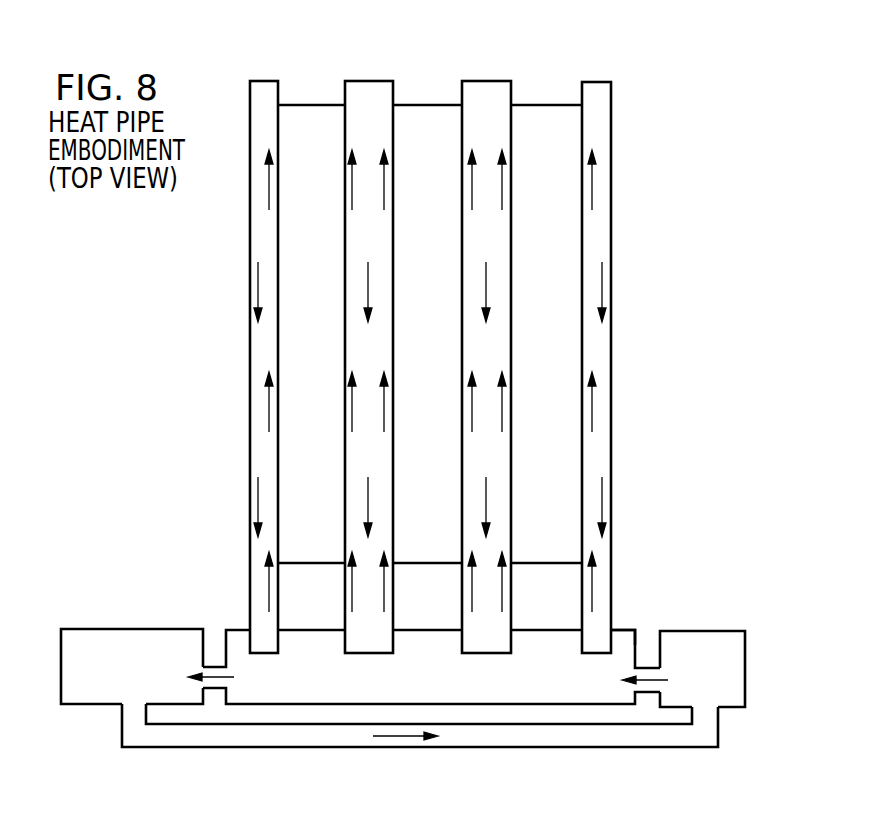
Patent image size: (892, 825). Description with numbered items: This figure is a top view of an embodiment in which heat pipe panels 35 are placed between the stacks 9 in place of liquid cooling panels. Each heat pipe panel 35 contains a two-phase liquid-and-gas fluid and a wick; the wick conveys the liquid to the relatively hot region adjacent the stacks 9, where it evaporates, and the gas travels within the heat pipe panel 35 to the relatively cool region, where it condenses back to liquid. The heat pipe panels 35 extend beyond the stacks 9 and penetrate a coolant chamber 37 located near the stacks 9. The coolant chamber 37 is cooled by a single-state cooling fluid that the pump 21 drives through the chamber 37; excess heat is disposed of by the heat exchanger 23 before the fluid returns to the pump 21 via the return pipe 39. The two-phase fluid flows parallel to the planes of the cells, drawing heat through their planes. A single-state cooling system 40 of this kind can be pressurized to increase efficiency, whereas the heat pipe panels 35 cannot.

The heat pipe panel 35 is at (593, 87).
The stack 9 is at (544, 113).
The coolant chamber 37 is at (428, 667).
The heat exchanger 23 is at (150, 628).
The pump 21 is at (710, 631).
The return pipe 39 is at (663, 726).
The cooling system 40 is at (628, 631).